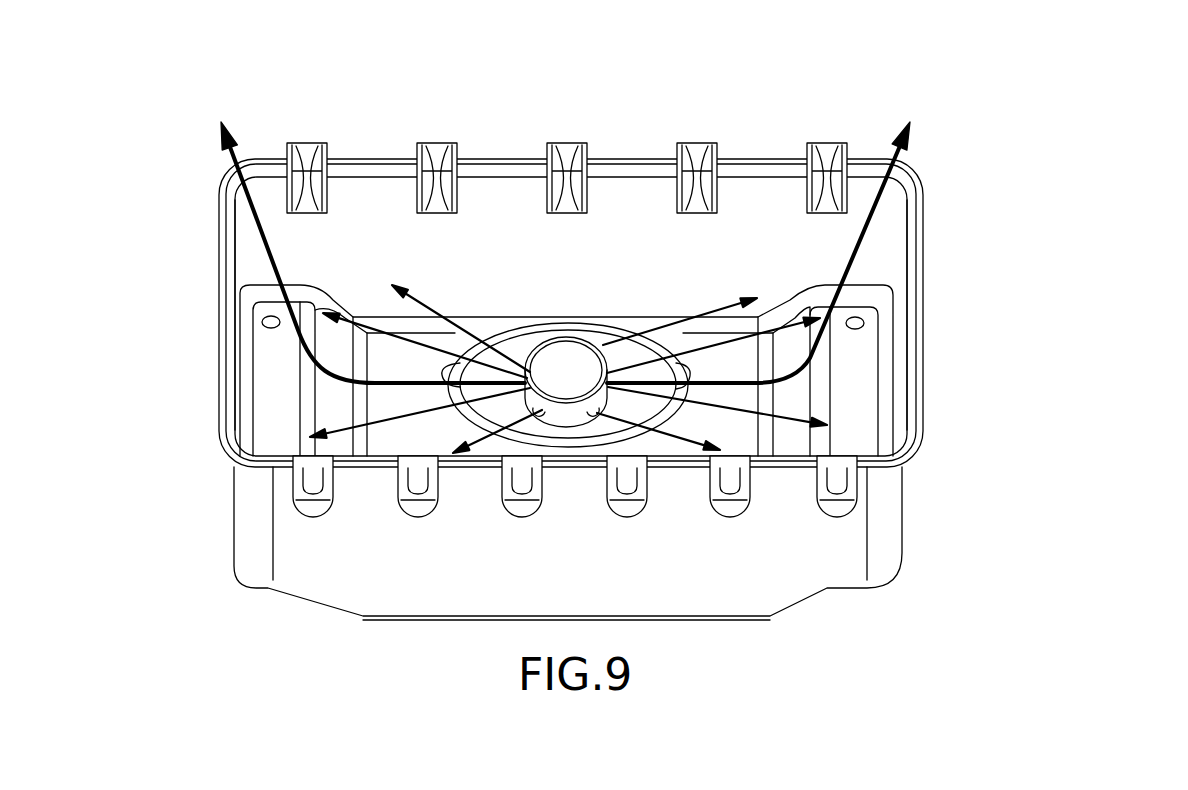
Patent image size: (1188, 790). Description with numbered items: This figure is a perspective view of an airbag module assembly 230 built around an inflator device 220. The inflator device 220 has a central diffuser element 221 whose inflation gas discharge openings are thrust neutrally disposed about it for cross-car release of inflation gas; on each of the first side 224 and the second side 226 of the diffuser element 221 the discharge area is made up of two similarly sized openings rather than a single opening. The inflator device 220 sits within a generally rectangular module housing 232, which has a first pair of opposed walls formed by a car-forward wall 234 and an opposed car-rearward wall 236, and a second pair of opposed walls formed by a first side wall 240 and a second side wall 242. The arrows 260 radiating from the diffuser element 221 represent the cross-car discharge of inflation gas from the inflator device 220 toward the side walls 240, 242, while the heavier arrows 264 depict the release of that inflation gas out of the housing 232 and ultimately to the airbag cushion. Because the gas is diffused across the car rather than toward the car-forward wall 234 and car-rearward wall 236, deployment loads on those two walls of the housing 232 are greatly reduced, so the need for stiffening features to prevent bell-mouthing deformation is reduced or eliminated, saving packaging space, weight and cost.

The inflator device 220 is at (478, 422).
The central diffuser element 221 is at (562, 355).
The first side 224 is at (526, 373).
The second side 226 is at (603, 402).
The airbag module assembly 230 is at (1098, 121).
The module housing 232 is at (939, 294).
The car-forward wall 234 is at (776, 156).
The car-rearward wall 236 is at (568, 468).
The first side wall 240 is at (222, 368).
The second side wall 242 is at (923, 372).
The arrows 260 is at (658, 327).
The arrows 264 is at (240, 153).